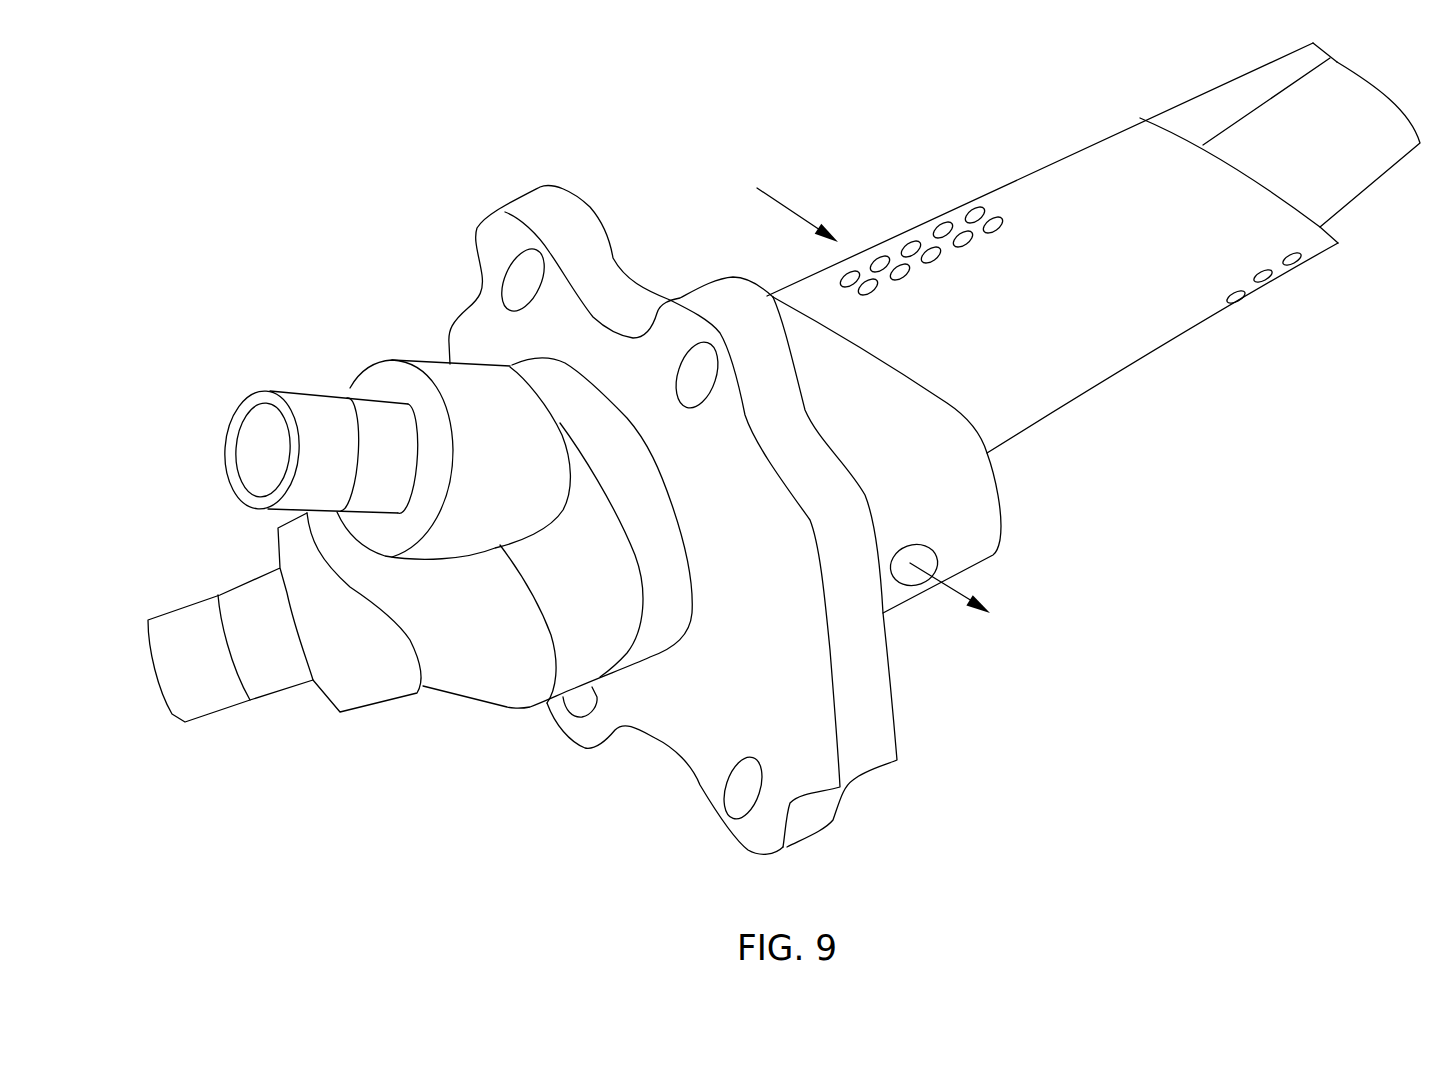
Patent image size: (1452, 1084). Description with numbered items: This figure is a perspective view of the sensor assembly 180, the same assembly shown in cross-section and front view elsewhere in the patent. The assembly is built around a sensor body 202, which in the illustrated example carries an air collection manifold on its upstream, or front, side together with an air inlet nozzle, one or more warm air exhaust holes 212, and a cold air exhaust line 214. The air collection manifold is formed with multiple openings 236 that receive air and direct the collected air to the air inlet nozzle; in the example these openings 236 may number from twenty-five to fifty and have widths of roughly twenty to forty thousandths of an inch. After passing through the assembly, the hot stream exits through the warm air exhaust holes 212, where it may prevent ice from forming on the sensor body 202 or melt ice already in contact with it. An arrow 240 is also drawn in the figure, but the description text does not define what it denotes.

The sensor assembly 180 is at (1208, 746).
The sensor body 202 is at (1059, 375).
The warm air exhaust holes 212 is at (1238, 302).
The cold air exhaust line 214 is at (912, 563).
The openings 236 is at (988, 208).
The airflow direction arrow 240 is at (790, 203).